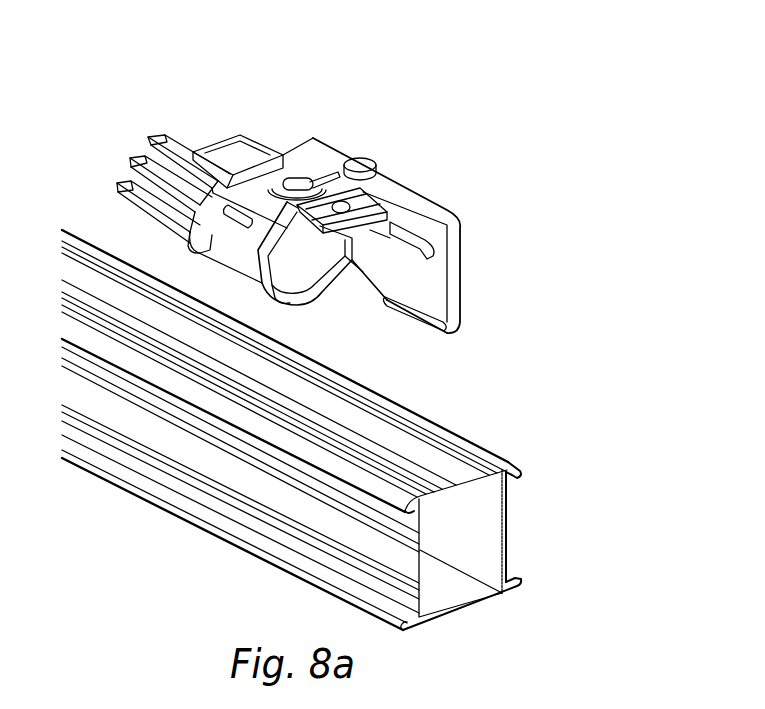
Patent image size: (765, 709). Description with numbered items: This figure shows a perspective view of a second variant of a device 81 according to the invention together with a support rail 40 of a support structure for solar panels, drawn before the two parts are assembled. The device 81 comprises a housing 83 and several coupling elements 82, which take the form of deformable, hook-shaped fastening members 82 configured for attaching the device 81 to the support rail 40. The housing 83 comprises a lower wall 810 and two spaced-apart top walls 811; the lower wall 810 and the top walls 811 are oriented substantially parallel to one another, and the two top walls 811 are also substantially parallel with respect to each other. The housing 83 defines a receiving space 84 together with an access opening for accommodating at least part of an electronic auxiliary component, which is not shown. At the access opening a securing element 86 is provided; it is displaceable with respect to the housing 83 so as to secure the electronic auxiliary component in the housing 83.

The support rail 40 is at (532, 467).
The device 81 is at (398, 156).
The coupling elements 82 is at (207, 252).
The housing 83 is at (420, 207).
The receiving space 84 is at (370, 230).
The securing element 86 is at (307, 178).
The lower wall 810 is at (380, 258).
The top walls 811 is at (237, 150).